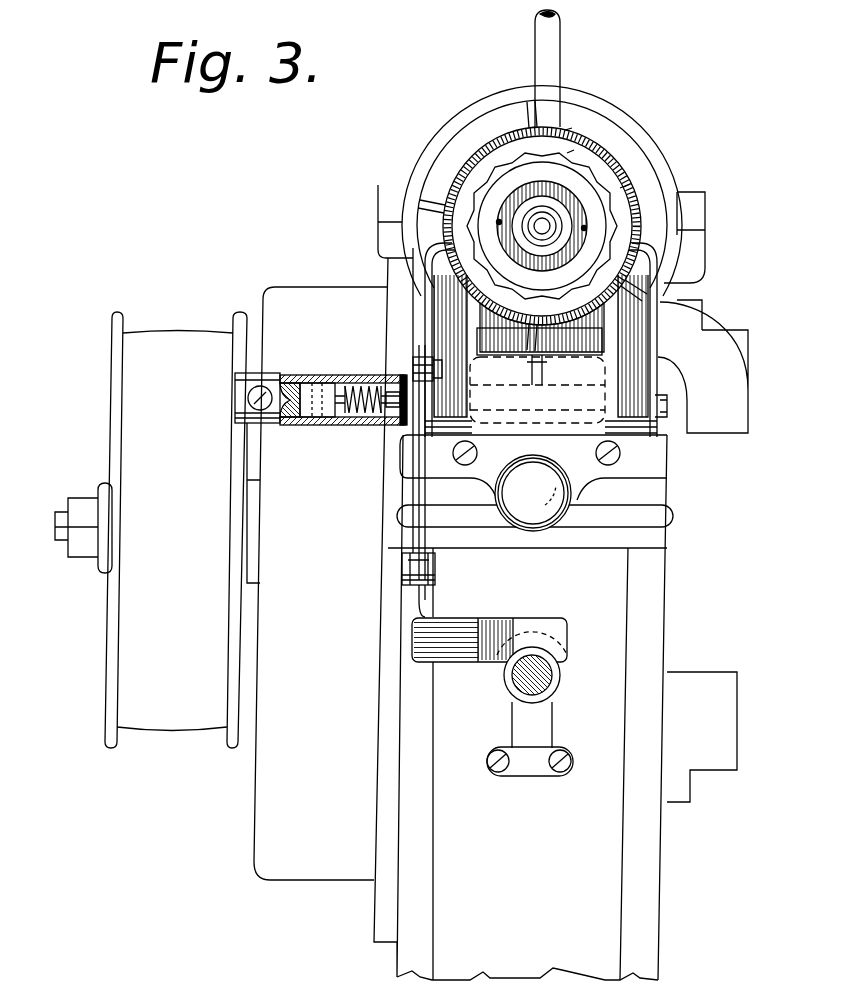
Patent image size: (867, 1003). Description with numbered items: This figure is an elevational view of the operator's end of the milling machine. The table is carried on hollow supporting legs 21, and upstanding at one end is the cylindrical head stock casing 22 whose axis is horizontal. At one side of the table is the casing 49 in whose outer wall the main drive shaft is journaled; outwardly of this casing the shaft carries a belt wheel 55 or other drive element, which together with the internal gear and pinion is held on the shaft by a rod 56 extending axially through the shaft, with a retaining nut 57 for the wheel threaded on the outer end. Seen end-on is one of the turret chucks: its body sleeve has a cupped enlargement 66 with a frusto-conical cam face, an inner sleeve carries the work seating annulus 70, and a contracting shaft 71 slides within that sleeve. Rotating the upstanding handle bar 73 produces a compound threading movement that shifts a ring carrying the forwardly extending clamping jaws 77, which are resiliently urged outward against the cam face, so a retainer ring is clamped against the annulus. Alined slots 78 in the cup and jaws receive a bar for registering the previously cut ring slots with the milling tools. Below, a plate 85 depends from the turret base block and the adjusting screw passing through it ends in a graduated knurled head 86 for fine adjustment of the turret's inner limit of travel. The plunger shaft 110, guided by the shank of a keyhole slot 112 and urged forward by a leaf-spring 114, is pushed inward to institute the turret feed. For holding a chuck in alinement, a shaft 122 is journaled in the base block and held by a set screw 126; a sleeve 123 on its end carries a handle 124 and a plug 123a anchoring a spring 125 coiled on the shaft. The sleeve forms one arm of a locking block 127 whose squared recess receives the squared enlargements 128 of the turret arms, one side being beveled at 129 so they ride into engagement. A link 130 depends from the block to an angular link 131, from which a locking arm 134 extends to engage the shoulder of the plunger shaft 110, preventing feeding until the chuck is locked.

The supporting legs 21 is at (685, 514).
The head stock casing 22 is at (466, 104).
The casing 49 is at (268, 795).
The belt wheel 55 is at (130, 665).
The rod 56 is at (62, 517).
The retaining nut 57 is at (92, 545).
The cupped enlargement 66 is at (610, 150).
The work seating annulus 70 is at (488, 180).
The contracting shaft 71 is at (533, 217).
The handle bar 73 is at (552, 57).
The clamping jaws 77 is at (638, 186).
The alined slots 78 is at (571, 128).
The plate 85 is at (642, 473).
The knurled head 86 is at (545, 484).
The plunger shaft 110 is at (560, 680).
The keyhole slot 112 is at (550, 649).
The leaf-spring 114 is at (520, 730).
The shaft 122 is at (384, 424).
The sleeve 123 is at (333, 374).
The plug 123a is at (308, 394).
The handle 124 is at (255, 397).
The spring 125 is at (343, 412).
The set screw 126 is at (535, 383).
The locking block 127 is at (455, 343).
The squared enlargements 128 is at (607, 337).
The bevel 129 is at (657, 360).
The link 130 is at (420, 492).
The angular link 131 is at (416, 578).
The locking arm 134 is at (459, 632).